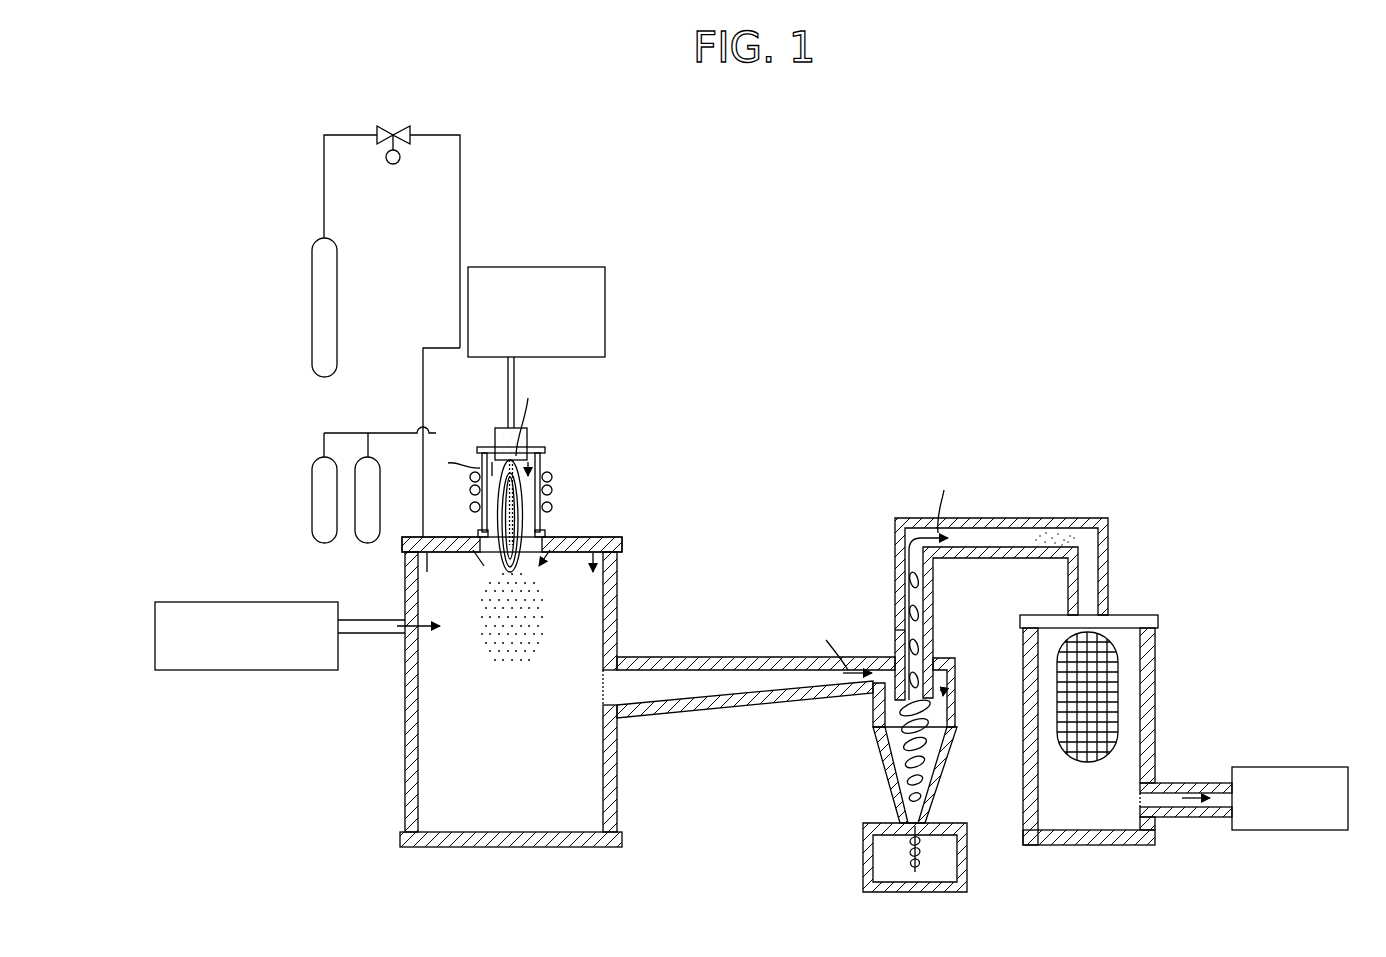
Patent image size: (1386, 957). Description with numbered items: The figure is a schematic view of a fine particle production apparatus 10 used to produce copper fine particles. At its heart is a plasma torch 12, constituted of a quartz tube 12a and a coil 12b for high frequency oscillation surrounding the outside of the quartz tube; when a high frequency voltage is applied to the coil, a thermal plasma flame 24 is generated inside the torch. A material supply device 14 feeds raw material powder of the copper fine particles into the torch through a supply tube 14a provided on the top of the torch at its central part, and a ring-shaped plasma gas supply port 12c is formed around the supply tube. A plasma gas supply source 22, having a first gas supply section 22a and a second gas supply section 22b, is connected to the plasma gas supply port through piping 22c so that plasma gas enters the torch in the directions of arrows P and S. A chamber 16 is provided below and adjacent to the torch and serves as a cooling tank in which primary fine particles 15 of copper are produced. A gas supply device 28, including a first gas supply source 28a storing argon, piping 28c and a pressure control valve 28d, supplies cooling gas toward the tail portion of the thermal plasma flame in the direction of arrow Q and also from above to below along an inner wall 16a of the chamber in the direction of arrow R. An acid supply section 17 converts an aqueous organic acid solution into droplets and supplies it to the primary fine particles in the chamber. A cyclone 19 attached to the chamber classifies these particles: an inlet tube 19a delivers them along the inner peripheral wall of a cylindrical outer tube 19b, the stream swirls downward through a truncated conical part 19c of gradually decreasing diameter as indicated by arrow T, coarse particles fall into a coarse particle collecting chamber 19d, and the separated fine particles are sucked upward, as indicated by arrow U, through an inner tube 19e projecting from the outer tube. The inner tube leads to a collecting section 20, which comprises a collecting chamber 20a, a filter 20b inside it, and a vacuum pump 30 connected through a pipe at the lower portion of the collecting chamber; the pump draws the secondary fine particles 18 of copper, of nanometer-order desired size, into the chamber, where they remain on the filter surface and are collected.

The fine particle production apparatus 10 is at (925, 231).
The plasma torch 12 is at (564, 458).
The quartz tube 12a is at (542, 518).
The coil for high frequency oscillation 12b is at (552, 489).
The plasma gas supply port 12c is at (527, 454).
The material supply device 14 is at (606, 297).
The supply tube 14a is at (508, 396).
The primary fine particles 15 is at (537, 622).
The chamber 16 is at (628, 576).
The inner wall 16a is at (414, 805).
The acid supply section 17 is at (238, 601).
The secondary fine particles 18 is at (1056, 539).
The cyclone 19 is at (883, 645).
The inlet tube 19a is at (862, 690).
The outer tube 19b is at (955, 690).
The truncated conical part 19c is at (948, 775).
The coarse particle collecting chamber 19d is at (945, 863).
The inner tube 19e is at (933, 632).
The collecting section 20 is at (1050, 610).
The collecting chamber 20a is at (1113, 767).
The filter 20b is at (1118, 700).
The plasma gas supply source 22 is at (288, 470).
The first gas supply section 22a is at (325, 544).
The second gas supply section 22b is at (370, 544).
The piping 22c is at (380, 432).
The thermal plasma flame 24 is at (507, 517).
The gas supply device 28 is at (433, 118).
The first gas supply source 28a is at (313, 321).
The piping 28c is at (433, 346).
The pressure control valve 28d is at (383, 124).
The vacuum pump 30 is at (1256, 765).